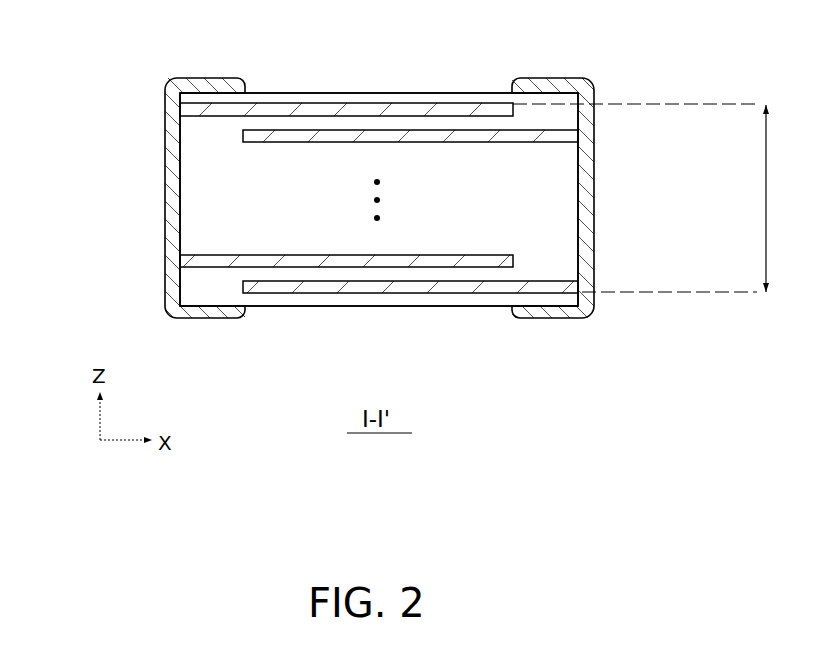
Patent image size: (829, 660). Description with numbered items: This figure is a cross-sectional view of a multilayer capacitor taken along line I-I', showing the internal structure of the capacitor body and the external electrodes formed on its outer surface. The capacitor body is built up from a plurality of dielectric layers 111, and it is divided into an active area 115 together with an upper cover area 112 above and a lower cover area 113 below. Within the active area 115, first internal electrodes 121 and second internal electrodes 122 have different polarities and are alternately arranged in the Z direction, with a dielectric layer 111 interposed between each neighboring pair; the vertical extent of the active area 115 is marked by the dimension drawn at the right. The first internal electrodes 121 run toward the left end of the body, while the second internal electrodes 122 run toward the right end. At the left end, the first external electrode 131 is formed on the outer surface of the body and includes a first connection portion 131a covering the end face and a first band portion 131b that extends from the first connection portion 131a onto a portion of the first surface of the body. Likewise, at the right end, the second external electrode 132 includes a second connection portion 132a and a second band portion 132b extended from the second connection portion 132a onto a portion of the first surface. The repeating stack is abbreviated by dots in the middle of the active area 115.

The dielectric layer 111 is at (447, 277).
The upper cover area 112 is at (385, 95).
The lower cover area 113 is at (387, 300).
The active area 115 is at (662, 198).
The first internal electrode 121 is at (225, 110).
The second internal electrode 122 is at (492, 285).
The first external electrode 131 is at (128, 199).
The first connection portion 131a is at (165, 217).
The first band portion 131b is at (210, 312).
The second external electrode 132 is at (631, 208).
The second connection portion 132a is at (594, 215).
The second band portion 132b is at (547, 313).